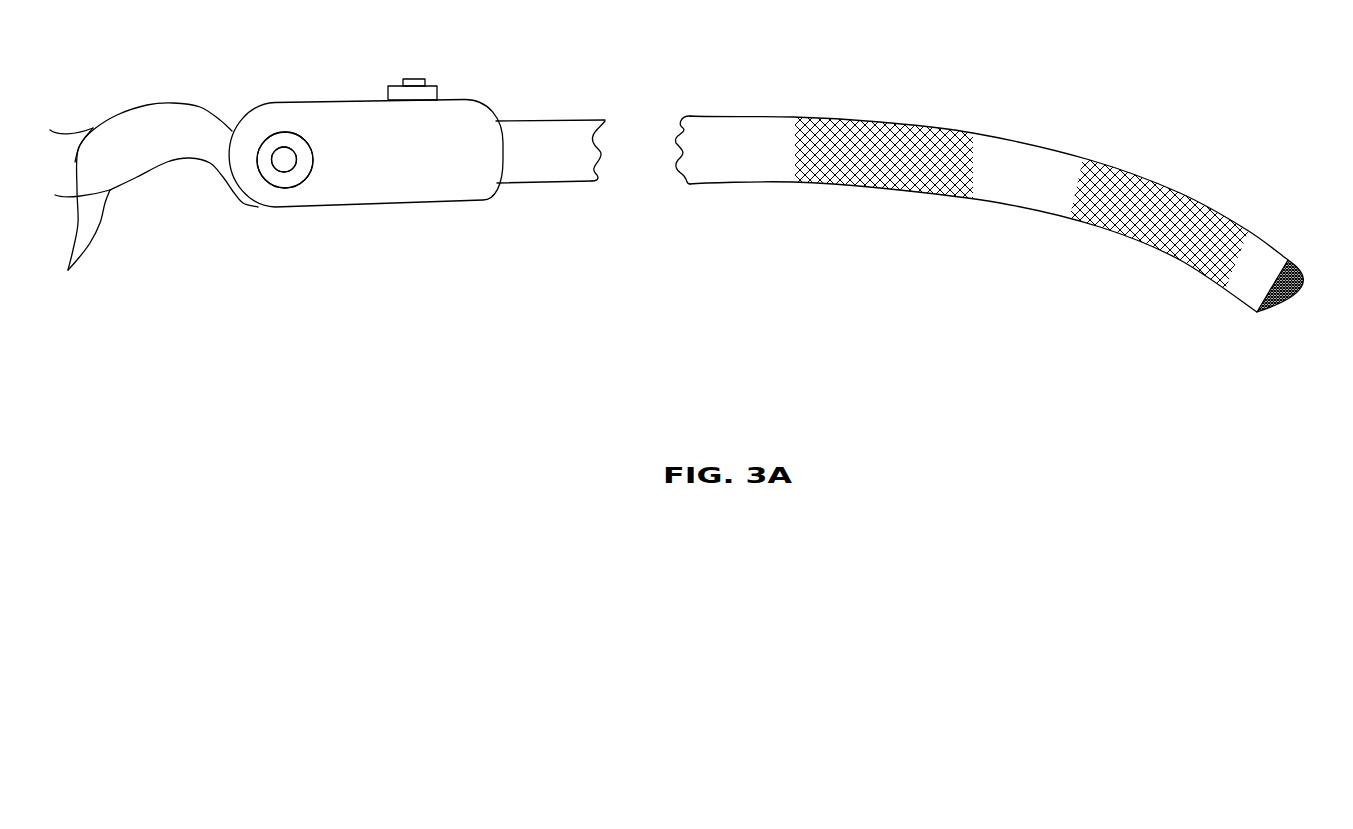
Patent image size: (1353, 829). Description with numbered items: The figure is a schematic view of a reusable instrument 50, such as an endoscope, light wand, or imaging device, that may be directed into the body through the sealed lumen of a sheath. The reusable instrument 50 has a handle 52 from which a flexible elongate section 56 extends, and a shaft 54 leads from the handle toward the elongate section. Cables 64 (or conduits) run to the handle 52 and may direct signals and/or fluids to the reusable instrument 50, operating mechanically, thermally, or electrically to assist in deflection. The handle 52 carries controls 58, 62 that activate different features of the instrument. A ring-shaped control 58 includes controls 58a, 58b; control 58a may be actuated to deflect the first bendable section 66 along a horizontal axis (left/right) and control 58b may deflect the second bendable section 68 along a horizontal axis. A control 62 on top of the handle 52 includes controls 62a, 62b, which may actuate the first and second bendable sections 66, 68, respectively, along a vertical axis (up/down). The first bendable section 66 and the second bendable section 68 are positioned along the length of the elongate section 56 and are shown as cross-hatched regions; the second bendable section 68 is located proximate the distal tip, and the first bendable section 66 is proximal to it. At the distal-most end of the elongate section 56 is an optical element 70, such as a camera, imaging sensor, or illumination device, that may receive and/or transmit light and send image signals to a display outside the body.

The reusable instrument 50 is at (989, 214).
The handle 52 is at (417, 182).
The shaft 54 is at (793, 98).
The flexible elongate section 56 is at (728, 132).
The control 58 is at (285, 135).
The control 58a is at (283, 163).
The control 58b is at (306, 186).
The control 62 is at (451, 55).
The control 62a is at (412, 80).
The control 62b is at (432, 98).
The cables 64 is at (145, 210).
The first bendable section 66 is at (923, 148).
The second bendable section 68 is at (1123, 188).
The optical element 70 is at (1283, 313).